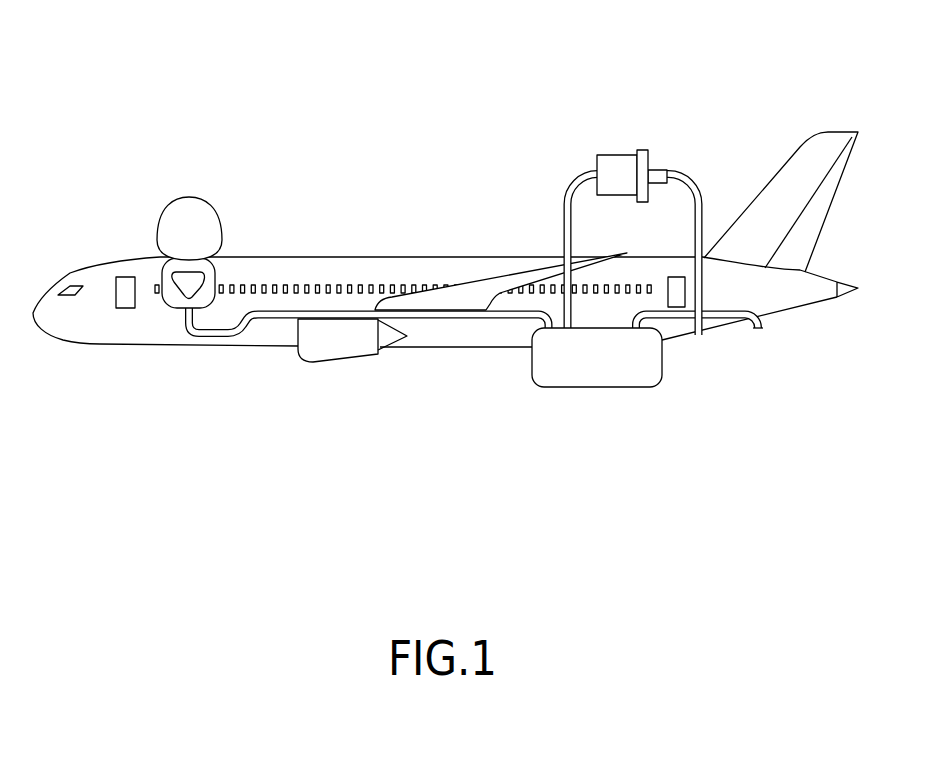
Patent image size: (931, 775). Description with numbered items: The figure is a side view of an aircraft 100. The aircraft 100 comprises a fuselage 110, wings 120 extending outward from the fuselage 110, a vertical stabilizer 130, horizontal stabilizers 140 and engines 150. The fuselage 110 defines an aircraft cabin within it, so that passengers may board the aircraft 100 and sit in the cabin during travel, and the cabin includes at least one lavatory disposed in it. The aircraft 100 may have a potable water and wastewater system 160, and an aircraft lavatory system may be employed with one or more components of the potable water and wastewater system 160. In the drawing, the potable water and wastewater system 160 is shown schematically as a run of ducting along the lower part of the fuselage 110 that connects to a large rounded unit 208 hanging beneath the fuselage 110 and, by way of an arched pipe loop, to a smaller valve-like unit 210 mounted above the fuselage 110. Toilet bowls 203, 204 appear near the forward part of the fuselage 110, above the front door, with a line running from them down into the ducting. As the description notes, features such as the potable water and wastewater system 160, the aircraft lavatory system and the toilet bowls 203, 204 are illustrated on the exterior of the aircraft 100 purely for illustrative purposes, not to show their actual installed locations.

The aircraft 100 is at (445, 281).
The fuselage 110 is at (300, 261).
The wings 120 is at (478, 280).
The vertical stabilizer 130 is at (843, 148).
The horizontal stabilizers 140 is at (858, 290).
The engines 150 is at (355, 353).
The potable water and wastewater system 160 is at (476, 290).
The toilet bowl 203 is at (180, 225).
The toilet bowl 204 is at (188, 283).
The air conditioning unit 208 is at (562, 372).
The valve unit 210 is at (617, 163).